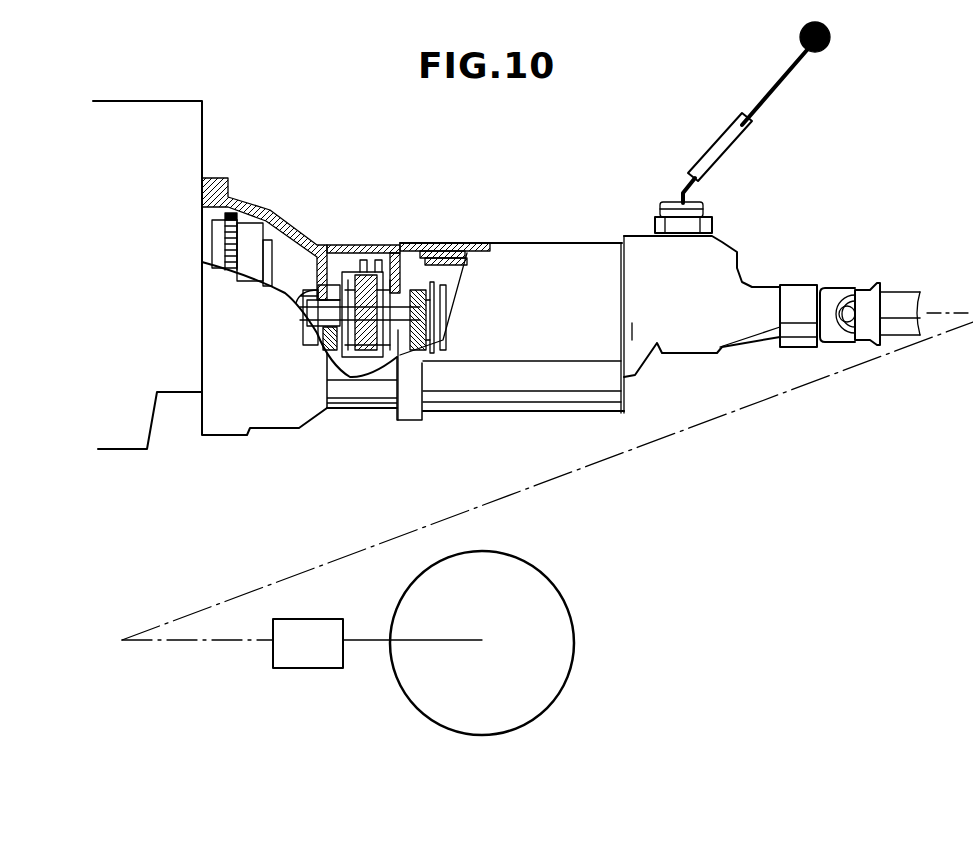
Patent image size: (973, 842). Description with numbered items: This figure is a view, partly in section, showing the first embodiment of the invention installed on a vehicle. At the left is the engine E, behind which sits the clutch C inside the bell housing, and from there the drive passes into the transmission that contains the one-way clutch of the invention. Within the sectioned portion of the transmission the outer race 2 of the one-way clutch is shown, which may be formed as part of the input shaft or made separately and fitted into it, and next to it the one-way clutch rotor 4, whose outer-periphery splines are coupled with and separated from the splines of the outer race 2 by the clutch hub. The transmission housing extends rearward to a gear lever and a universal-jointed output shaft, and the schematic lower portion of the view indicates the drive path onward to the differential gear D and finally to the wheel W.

The engine E is at (185, 123).
The clutch C is at (248, 240).
The outer race 2 is at (352, 280).
The one-way clutch rotor 4 is at (397, 270).
The differential gear D is at (328, 628).
The wheel W is at (575, 640).